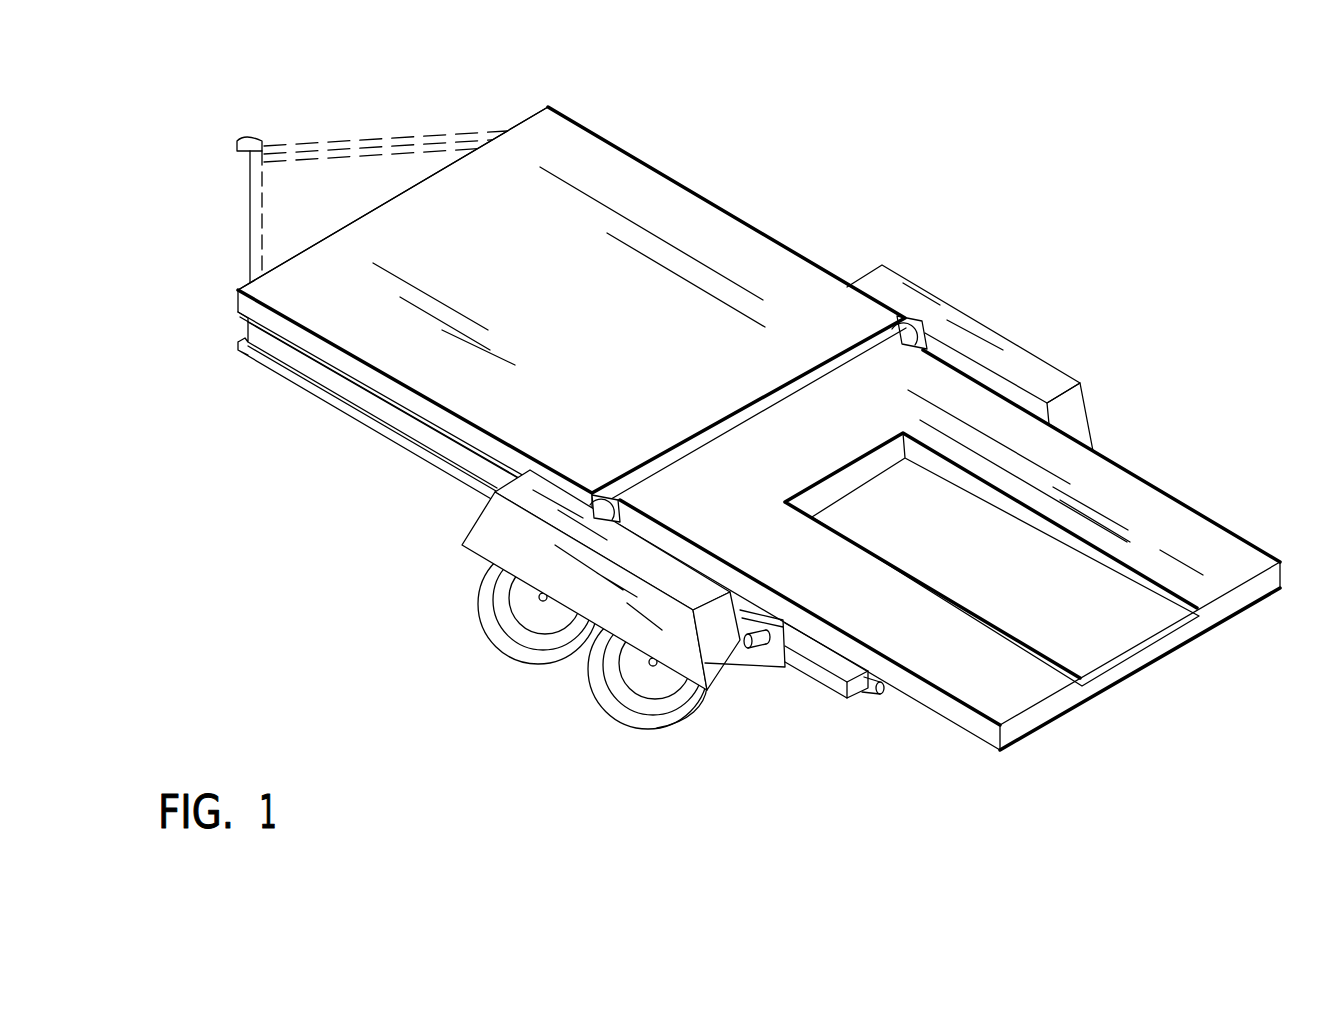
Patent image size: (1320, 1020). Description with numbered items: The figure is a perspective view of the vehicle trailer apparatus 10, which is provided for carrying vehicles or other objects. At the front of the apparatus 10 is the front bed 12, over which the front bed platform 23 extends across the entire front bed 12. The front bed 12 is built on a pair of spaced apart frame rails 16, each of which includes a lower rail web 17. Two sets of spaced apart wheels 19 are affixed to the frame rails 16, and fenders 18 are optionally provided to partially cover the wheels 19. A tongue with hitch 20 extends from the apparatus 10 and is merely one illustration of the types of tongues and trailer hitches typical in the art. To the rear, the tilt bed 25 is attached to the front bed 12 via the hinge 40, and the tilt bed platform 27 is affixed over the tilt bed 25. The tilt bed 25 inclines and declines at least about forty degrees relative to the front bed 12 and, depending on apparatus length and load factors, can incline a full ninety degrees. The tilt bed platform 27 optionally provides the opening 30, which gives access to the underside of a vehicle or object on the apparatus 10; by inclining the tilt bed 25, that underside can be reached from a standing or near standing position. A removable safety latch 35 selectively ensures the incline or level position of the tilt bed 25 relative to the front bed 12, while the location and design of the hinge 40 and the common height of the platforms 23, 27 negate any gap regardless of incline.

The vehicle trailer apparatus 10 is at (1066, 142).
The front bed 12 is at (572, 287).
The frame rails 16 is at (245, 384).
The lower rail web 17 is at (350, 412).
The fenders 18 is at (470, 496).
The wheels 19 is at (596, 708).
The tongue with hitch 20 is at (356, 105).
The front bed platform 23 is at (615, 170).
The tilt bed 25 is at (952, 550).
The tilt bed platform 27 is at (1187, 540).
The opening 30 is at (1105, 647).
The safety latch 35 is at (796, 703).
The hinge 40 is at (916, 296).